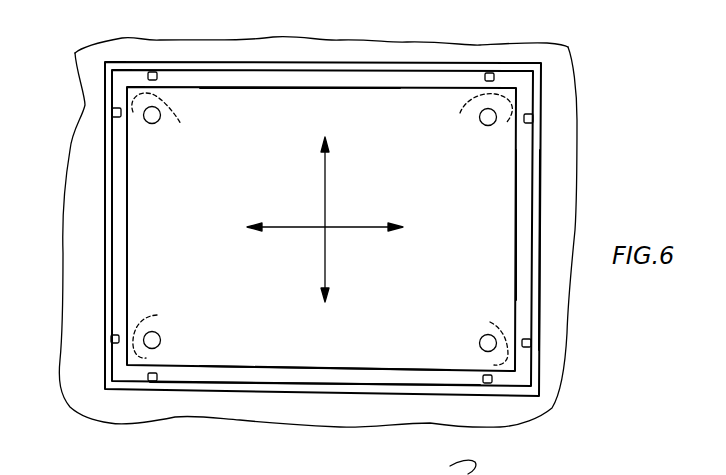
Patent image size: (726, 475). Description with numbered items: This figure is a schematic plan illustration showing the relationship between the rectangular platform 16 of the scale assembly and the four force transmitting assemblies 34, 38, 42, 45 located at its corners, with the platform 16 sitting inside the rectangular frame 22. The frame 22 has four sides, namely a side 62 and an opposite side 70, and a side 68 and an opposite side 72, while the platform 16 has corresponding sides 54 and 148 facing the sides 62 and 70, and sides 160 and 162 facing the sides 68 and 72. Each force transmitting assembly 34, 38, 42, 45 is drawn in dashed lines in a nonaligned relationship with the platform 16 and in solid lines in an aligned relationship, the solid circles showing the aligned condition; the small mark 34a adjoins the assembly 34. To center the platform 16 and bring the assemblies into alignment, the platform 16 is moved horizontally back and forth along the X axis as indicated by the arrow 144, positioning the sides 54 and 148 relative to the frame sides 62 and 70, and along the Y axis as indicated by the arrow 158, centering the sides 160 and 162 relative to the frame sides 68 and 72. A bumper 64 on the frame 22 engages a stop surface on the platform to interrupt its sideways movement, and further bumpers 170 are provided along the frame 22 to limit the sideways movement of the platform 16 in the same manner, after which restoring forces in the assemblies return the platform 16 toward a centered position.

The platform 16 is at (379, 362).
The frame 22 is at (329, 58).
The force transmitting assembly 34 is at (490, 322).
The roller pin 34a is at (446, 465).
The force transmitting assembly 38 is at (156, 332).
The force transmitting assembly 42 is at (160, 116).
The force transmitting assembly 45 is at (479, 118).
The platform side 54 is at (126, 253).
The frame side 62 is at (537, 308).
The bumper 64 is at (533, 343).
The frame side 68 is at (275, 388).
The frame side 70 is at (105, 252).
The frame side 72 is at (422, 72).
The arrow 144 is at (362, 231).
The platform side 148 is at (519, 212).
The arrow 158 is at (325, 260).
The platform side 160 is at (285, 80).
The platform side 162 is at (333, 371).
The bumpers 170 is at (152, 72).